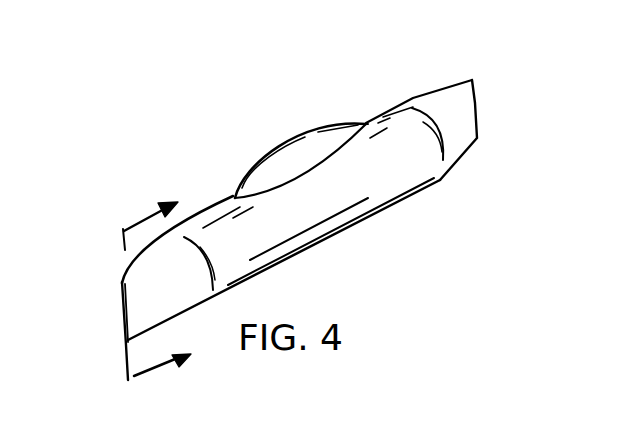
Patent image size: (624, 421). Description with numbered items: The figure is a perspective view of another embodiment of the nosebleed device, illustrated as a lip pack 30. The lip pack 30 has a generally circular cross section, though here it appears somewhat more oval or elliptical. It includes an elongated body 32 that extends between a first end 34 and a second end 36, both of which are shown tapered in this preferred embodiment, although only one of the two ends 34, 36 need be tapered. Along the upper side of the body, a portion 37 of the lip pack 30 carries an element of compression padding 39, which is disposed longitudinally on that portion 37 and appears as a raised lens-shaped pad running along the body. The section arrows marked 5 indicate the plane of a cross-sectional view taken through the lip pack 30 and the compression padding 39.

The lip pack 30 is at (239, 144).
The elongated body 32 is at (386, 194).
The first end 34 is at (120, 316).
The second end 36 is at (477, 102).
The portion 37 is at (368, 122).
The compression padding 39 is at (313, 126).
The section line 5- 5 is at (167, 278).